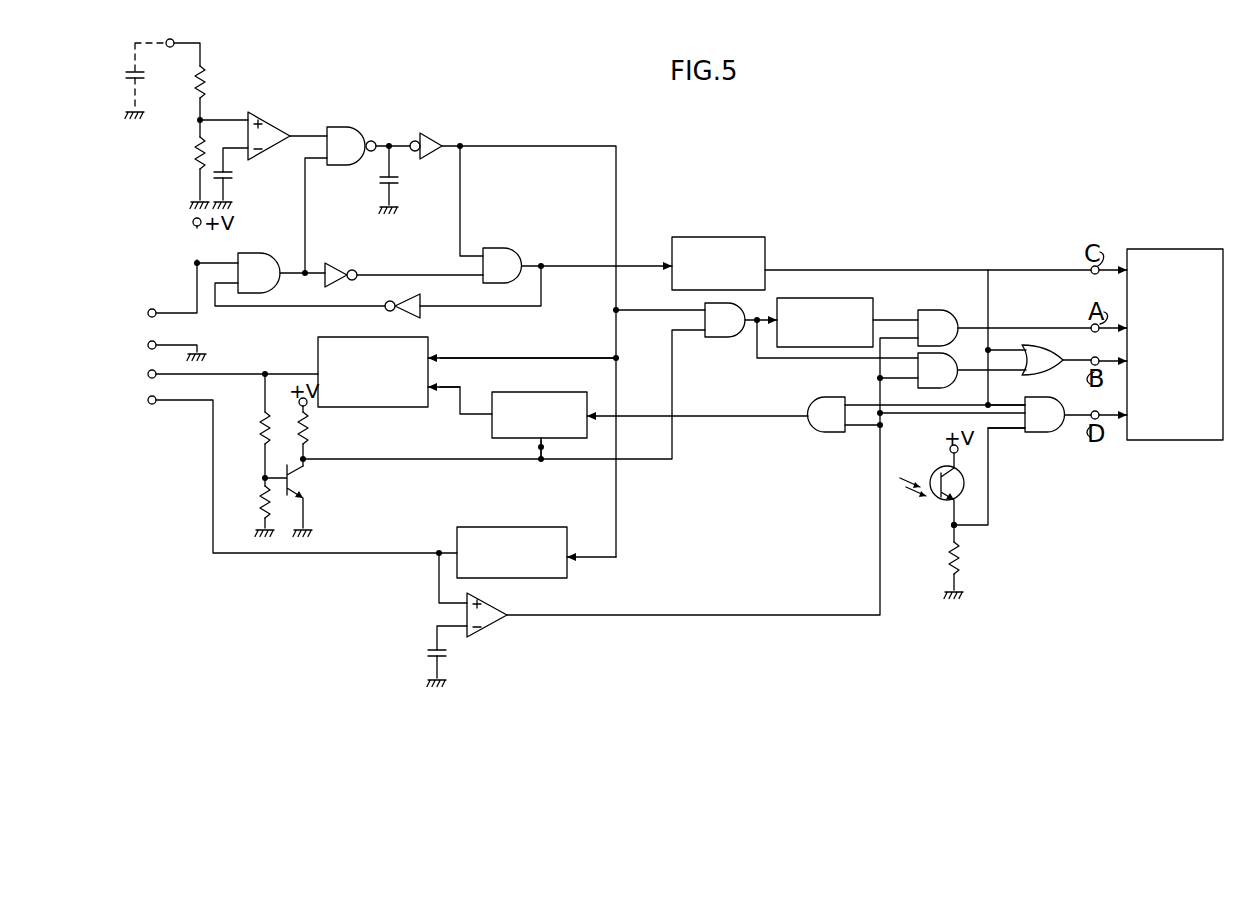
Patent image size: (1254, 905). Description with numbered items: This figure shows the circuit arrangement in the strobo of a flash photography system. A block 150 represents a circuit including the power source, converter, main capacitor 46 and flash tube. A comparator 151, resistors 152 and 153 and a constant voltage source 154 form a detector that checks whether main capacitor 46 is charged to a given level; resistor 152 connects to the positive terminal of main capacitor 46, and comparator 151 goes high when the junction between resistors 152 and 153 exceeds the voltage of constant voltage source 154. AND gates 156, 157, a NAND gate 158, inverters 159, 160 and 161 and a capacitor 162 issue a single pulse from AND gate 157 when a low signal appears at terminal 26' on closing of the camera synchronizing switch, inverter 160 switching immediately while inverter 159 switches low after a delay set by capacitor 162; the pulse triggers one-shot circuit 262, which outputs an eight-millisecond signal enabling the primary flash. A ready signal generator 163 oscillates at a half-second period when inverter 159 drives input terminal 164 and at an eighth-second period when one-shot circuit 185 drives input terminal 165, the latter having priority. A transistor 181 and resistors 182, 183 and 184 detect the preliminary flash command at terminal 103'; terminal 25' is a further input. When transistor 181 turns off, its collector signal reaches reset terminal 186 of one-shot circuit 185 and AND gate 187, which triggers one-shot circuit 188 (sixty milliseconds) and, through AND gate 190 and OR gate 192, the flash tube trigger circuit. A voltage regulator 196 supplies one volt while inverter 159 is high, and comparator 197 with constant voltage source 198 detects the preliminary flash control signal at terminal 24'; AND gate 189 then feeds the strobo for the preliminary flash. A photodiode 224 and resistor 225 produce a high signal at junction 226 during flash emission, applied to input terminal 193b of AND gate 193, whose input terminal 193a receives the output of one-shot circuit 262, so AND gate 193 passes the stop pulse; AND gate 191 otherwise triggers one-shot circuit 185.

The main capacitor 46 is at (125, 76).
The resistor 152 is at (204, 82).
The resistor 153 is at (196, 160).
The comparator 151 is at (262, 123).
The constant voltage source 154 is at (229, 171).
The NAND gate 158 is at (362, 126).
The inverter 159 is at (435, 132).
The capacitor 162 is at (394, 176).
The AND gate 156 is at (263, 248).
The inverter 160 is at (336, 264).
The AND gate 157 is at (519, 253).
The inverter 161 is at (413, 313).
The terminal 26' is at (124, 309).
The terminal 25' is at (124, 343).
The terminal 103' is at (119, 373).
The terminal 24' is at (124, 401).
The ready signal generator 163 is at (320, 338).
The input terminal 164 is at (470, 357).
The input terminal 165 is at (452, 398).
The one-shot circuit 185 is at (531, 397).
The reset terminal 186 is at (535, 452).
The resistor 182 is at (264, 428).
The resistor 183 is at (263, 512).
The resistor 184 is at (308, 418).
The transistor 181 is at (296, 483).
The voltage regulator 196 is at (516, 527).
The comparator 197 is at (500, 603).
The constant voltage source 198 is at (444, 648).
The one-shot circuit 262 is at (718, 237).
The AND gate 187 is at (735, 338).
The one-shot circuit 188 is at (851, 298).
The AND gate 189 is at (928, 311).
The AND gate 190 is at (936, 387).
The AND gate 191 is at (826, 397).
The OR gate 192 is at (1043, 348).
The AND gate 193 is at (1041, 432).
The input terminal 193a is at (1012, 404).
The input terminal 193b is at (1003, 430).
The photodiode 224 is at (938, 496).
The resistor 225 is at (958, 565).
The junction 226 is at (958, 527).
The block 150 is at (1170, 249).